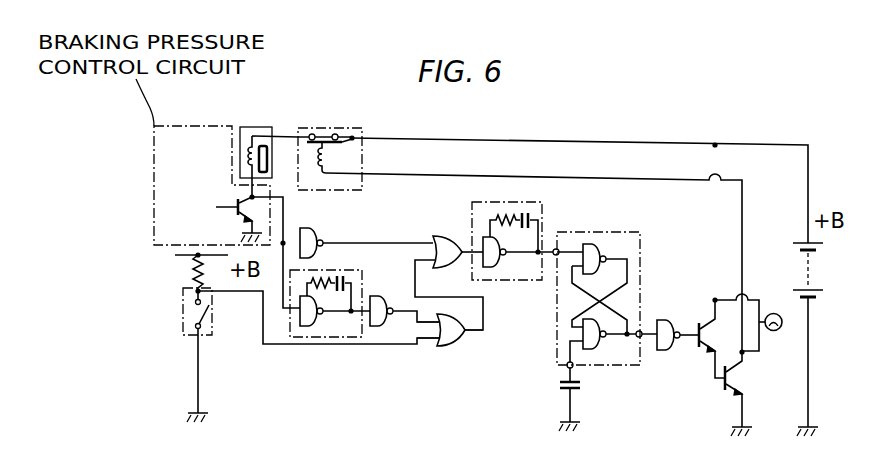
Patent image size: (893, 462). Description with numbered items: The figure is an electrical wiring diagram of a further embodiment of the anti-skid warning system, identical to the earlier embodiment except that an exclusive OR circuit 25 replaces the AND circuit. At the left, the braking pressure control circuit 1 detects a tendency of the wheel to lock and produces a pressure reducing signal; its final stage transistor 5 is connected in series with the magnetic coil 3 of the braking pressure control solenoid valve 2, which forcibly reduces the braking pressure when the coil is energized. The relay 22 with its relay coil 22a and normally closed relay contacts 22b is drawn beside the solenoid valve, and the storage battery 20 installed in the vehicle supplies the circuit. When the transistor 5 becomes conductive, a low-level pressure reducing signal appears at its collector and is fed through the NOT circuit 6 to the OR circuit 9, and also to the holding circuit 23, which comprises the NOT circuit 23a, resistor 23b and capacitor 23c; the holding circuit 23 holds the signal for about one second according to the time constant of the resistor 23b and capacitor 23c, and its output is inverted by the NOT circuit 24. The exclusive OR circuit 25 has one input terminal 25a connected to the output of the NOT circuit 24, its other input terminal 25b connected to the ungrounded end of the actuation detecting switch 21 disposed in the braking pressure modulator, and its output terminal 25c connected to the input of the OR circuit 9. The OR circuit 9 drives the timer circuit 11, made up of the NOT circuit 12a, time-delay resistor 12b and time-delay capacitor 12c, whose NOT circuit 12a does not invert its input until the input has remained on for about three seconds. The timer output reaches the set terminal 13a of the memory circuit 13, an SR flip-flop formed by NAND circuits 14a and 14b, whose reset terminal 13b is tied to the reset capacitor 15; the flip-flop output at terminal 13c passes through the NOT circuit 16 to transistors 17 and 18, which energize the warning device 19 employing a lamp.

The braking pressure control circuit 1 is at (212, 123).
The braking pressure control solenoid valve 2 is at (275, 113).
The magnetic coil 3 is at (248, 133).
The final stage transistor 5 is at (236, 206).
The NOT circuit 6 is at (309, 222).
The OR circuit 9 is at (452, 235).
The timer circuit 11 is at (553, 259).
The NOT circuit 12a is at (497, 270).
The time-delay resistor 12b is at (500, 213).
The time-delay capacitor 12c is at (527, 211).
The memory circuit 13 is at (642, 240).
The set terminal 13a is at (558, 240).
The reset terminal 13b is at (567, 369).
The output terminal 13c is at (641, 338).
The NAND circuit 14a is at (600, 245).
The NAND circuit 14b is at (609, 344).
The capacitor 15 is at (581, 385).
The NOT circuit 16 is at (661, 322).
The transistor 17 is at (697, 330).
The transistor 18 is at (737, 377).
The warning device 19 is at (774, 313).
The storage battery 20 is at (805, 263).
The actuation detecting switch 21 is at (183, 320).
The relay 22 is at (345, 128).
The relay coil 22a is at (330, 155).
The normally closed relay contacts 22b is at (320, 133).
The holding circuit 23 is at (312, 345).
The NOT circuit 23a is at (305, 322).
The resistor 23b is at (322, 282).
The capacitor 23c is at (344, 279).
The NOT circuit 24 is at (381, 293).
The exclusive OR circuit 25 is at (449, 344).
The input terminal 25a is at (432, 326).
The input terminal 25b is at (417, 345).
The output terminal 25c is at (484, 330).